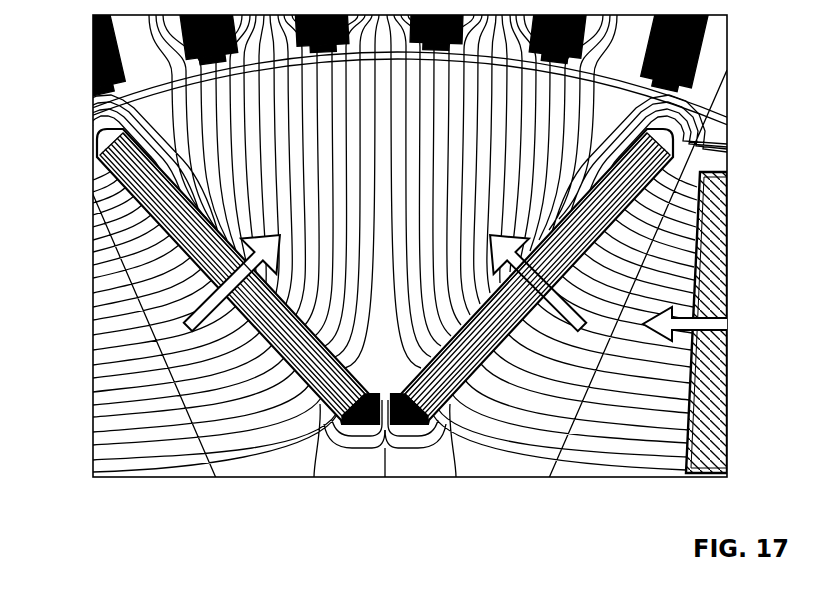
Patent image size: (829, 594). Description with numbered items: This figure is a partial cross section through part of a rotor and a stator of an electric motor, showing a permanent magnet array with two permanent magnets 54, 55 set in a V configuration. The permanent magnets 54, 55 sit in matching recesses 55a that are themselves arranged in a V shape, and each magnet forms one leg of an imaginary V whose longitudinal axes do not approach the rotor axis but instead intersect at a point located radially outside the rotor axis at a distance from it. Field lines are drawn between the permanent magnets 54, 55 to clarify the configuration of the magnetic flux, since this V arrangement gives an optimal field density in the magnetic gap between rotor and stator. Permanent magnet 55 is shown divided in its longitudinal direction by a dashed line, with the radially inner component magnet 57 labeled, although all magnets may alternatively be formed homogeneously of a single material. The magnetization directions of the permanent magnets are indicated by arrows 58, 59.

The permanent magnet 54 is at (672, 138).
The permanent magnet 55 is at (99, 161).
The recess 55a is at (155, 168).
The radially inner component magnet 57 is at (328, 410).
The arrow 58 is at (182, 321).
The arrow 59 is at (512, 280).